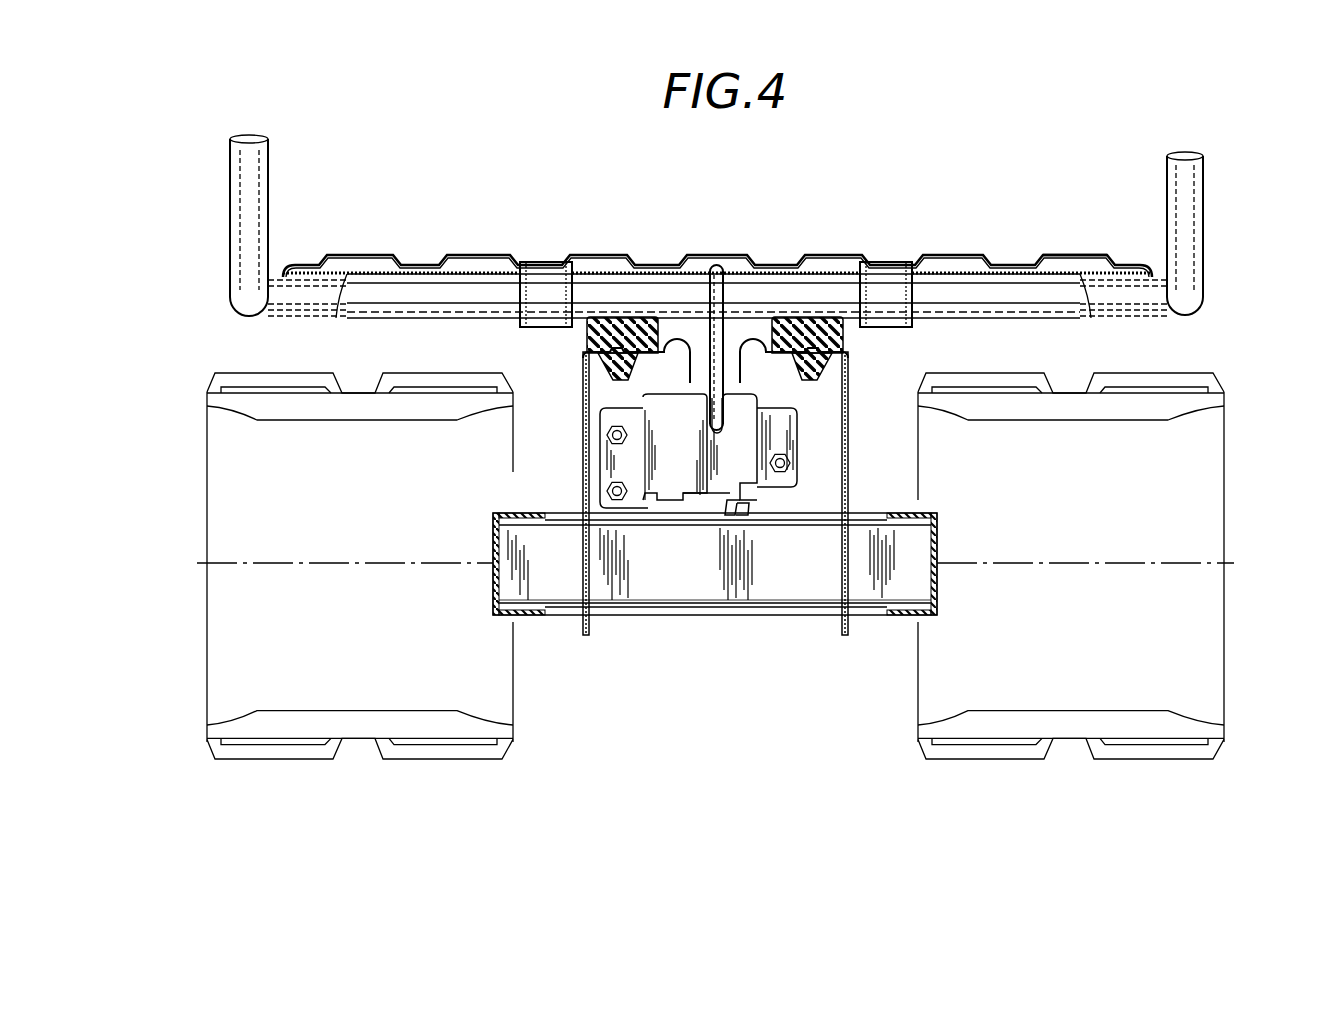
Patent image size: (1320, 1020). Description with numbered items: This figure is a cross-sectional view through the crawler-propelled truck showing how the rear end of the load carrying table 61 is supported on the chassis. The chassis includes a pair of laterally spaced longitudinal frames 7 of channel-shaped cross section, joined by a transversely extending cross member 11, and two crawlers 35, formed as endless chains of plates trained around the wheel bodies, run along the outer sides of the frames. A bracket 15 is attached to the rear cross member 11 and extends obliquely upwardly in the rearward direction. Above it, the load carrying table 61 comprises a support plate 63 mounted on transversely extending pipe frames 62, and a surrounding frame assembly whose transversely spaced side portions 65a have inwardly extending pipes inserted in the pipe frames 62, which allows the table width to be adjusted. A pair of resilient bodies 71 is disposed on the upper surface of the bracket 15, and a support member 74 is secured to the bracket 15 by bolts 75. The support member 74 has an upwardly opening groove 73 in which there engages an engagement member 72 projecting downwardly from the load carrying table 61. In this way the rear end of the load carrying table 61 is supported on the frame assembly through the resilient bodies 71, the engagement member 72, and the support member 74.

The side portion 65a is at (228, 199).
The load carrying table 61 is at (1022, 245).
The pipe frame 62 is at (948, 275).
The support plate 63 is at (1082, 256).
The engagement member 72 is at (724, 335).
The resilient body 71 is at (588, 334).
The groove 73 is at (725, 413).
The bolt 75 is at (607, 435).
The bracket 15 is at (848, 471).
The longitudinal frame 7 is at (503, 512).
The support member 74 is at (690, 483).
The cross member 11 is at (733, 614).
The crawler 35 is at (459, 760).